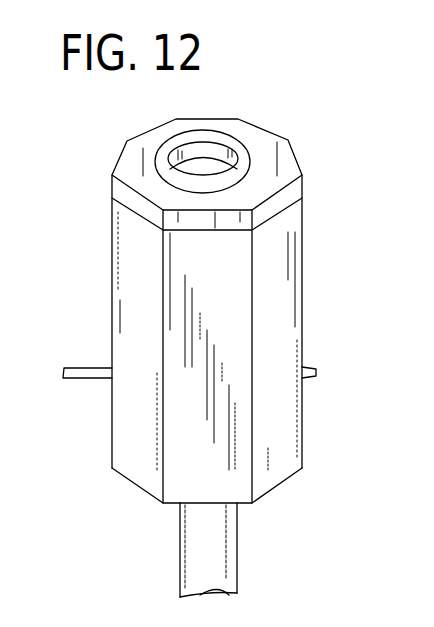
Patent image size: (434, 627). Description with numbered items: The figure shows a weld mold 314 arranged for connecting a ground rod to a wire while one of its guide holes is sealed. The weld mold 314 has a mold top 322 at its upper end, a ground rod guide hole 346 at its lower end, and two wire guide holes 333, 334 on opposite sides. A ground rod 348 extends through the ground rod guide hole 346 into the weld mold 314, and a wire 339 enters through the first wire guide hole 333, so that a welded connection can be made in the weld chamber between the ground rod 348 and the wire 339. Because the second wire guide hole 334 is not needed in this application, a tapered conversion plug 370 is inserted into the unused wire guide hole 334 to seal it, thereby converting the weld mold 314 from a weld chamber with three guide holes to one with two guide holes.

The weld mold 314 is at (302, 245).
The mold top 322 is at (213, 119).
The wire guide hole 333 is at (79, 377).
The wire guide hole 334 is at (352, 363).
The wire 339 is at (90, 380).
The tapered conversion plug 370 is at (316, 372).
The ground rod guide hole 346 is at (217, 551).
The ground rod 348 is at (180, 546).